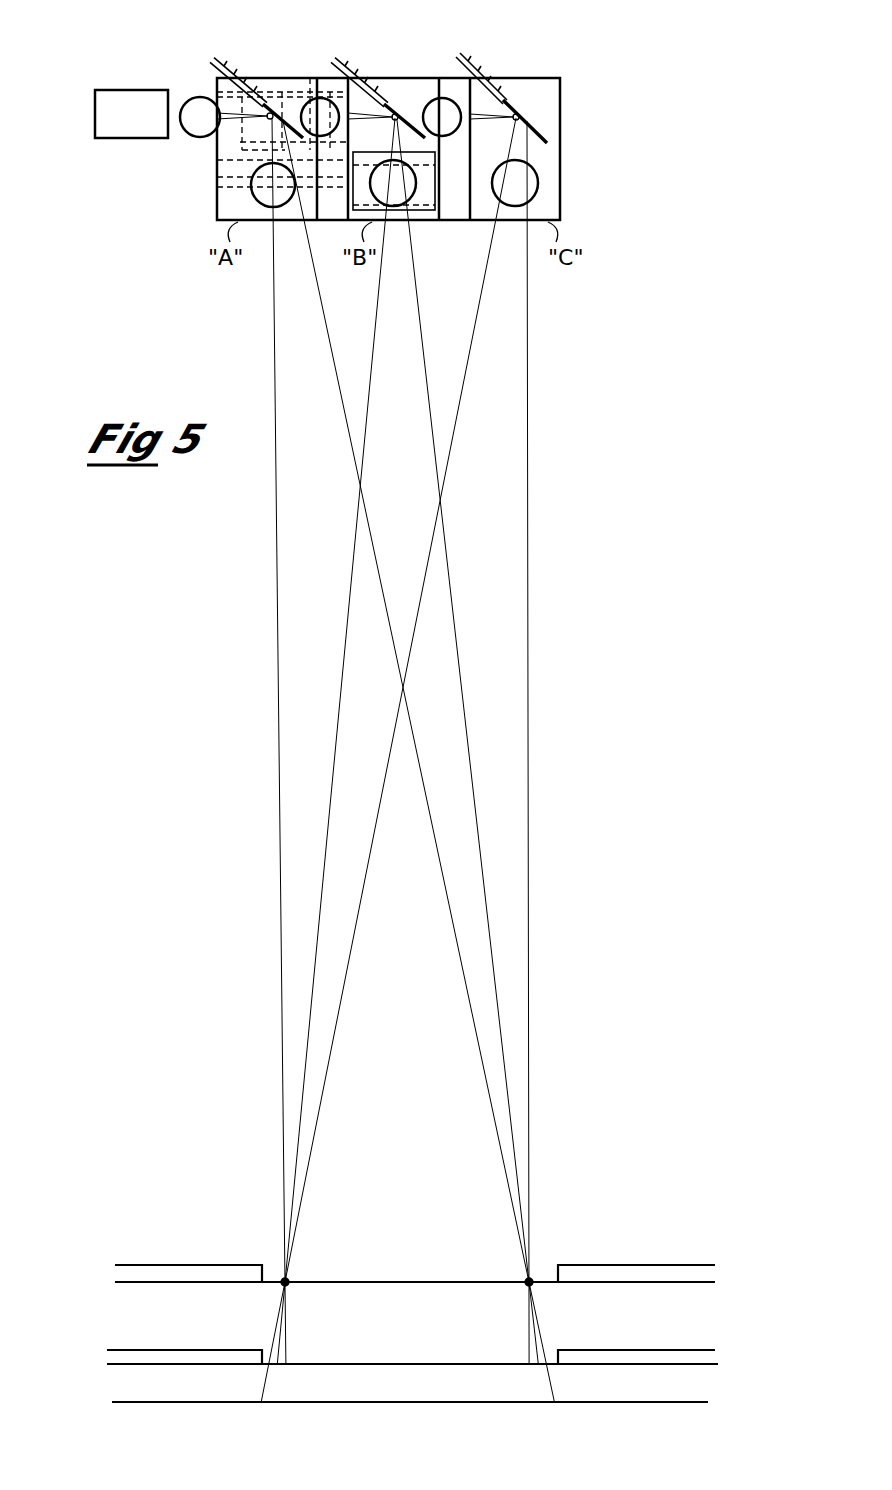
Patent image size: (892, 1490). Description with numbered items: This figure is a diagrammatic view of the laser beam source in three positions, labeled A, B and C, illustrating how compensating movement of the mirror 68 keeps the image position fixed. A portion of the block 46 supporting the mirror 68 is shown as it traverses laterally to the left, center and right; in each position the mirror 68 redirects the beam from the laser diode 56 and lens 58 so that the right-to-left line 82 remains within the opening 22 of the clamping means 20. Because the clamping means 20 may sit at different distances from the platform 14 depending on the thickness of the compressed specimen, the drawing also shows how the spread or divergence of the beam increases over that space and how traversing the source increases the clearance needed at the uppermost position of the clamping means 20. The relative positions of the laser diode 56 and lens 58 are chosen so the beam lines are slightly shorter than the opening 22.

The platform 14 is at (116, 1402).
The clamping means 20 is at (666, 1265).
The opening 22 is at (558, 1268).
The block 46 is at (549, 78).
The laser diode 56 is at (95, 112).
The lens 58 is at (200, 138).
The mirror 68 is at (232, 71).
The right-to-left line 82 is at (368, 1279).